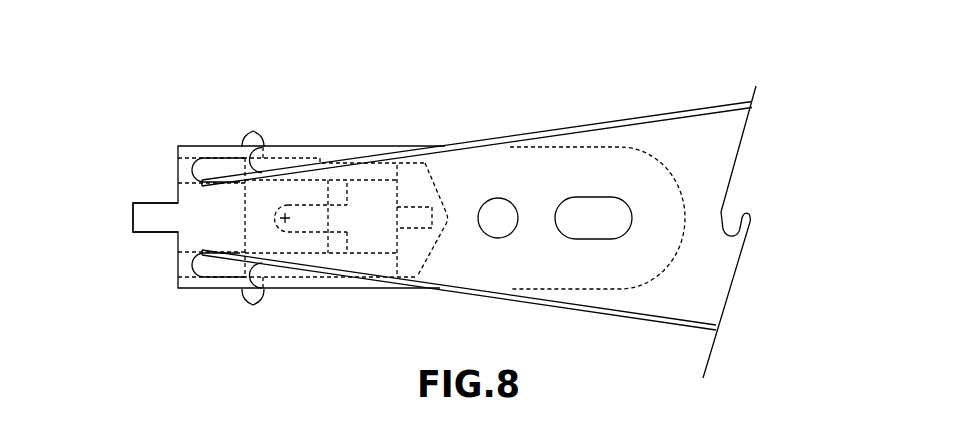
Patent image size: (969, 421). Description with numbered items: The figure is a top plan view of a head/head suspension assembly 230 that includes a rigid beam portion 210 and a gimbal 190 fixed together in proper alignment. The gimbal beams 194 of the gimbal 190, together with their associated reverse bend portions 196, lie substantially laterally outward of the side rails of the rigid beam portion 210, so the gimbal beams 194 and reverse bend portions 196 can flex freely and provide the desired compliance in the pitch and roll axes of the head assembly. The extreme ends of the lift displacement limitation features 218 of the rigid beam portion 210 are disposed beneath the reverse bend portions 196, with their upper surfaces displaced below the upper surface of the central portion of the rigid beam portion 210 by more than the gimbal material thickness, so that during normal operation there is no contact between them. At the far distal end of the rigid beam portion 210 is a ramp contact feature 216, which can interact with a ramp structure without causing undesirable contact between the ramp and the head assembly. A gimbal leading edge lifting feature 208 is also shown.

The head/head suspension assembly 230 is at (150, 130).
The ramp contact feature 216 is at (152, 218).
The lift displacement limitation feature 218 is at (211, 151).
The reverse bend portion 196 is at (253, 131).
The gimbal beam 194 is at (338, 157).
The gimbal leading edge lifting feature 208 is at (420, 217).
The gimbal 190 is at (524, 180).
The rigid beam portion 210 is at (699, 153).